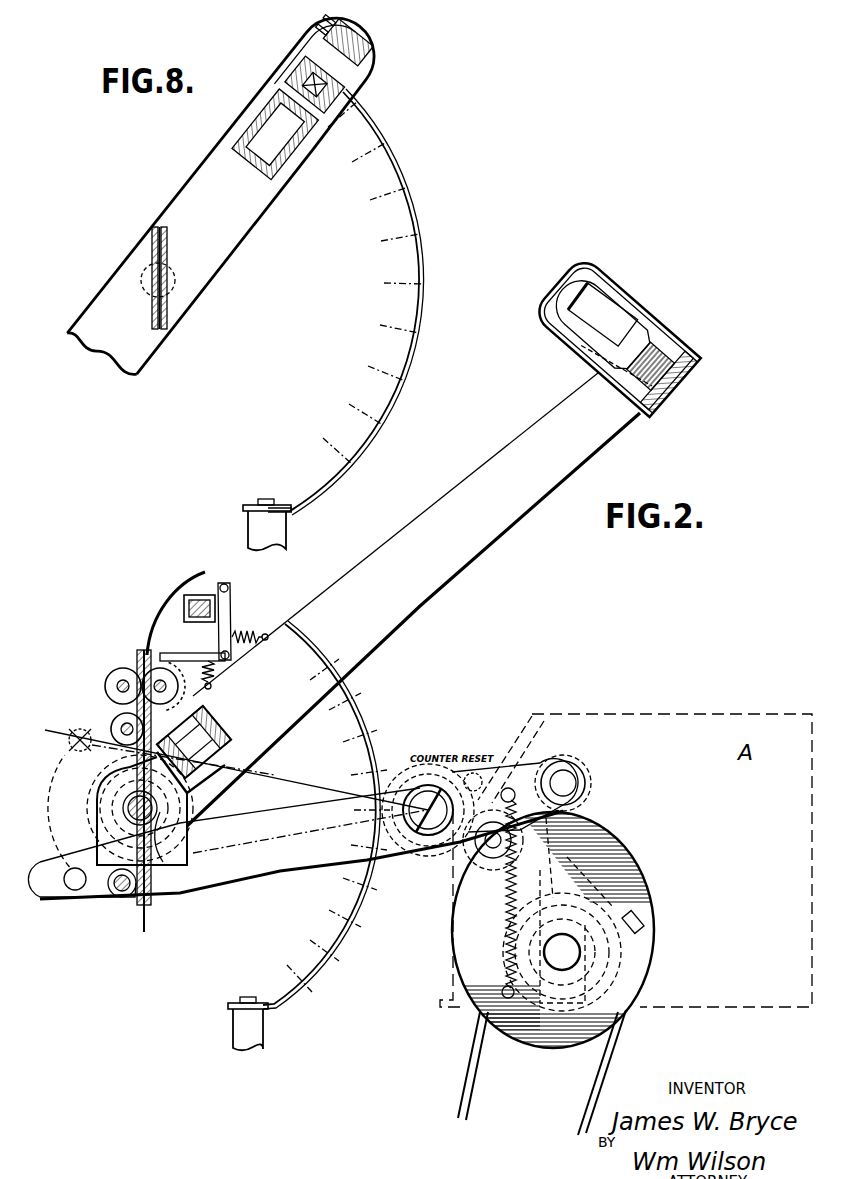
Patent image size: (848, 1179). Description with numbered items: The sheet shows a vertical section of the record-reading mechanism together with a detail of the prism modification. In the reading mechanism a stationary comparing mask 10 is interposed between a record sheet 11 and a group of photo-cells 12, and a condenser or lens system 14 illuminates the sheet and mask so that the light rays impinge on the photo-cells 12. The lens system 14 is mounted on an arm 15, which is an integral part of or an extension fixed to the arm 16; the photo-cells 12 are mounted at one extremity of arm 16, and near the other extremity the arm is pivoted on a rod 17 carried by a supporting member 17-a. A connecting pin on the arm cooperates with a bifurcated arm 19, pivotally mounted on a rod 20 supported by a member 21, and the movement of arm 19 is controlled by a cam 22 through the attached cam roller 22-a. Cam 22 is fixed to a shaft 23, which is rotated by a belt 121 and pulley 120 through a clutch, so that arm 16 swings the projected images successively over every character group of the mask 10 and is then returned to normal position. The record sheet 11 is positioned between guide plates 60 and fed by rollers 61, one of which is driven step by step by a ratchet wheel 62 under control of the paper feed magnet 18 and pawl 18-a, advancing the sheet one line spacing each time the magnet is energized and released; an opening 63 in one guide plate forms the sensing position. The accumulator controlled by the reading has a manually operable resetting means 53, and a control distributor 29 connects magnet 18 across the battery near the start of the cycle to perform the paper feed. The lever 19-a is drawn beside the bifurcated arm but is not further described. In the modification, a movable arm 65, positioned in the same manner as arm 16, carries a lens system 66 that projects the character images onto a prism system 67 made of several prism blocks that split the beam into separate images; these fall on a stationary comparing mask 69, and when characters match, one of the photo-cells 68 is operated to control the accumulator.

In FIG. 8, the movable arm 65 is at (201, 182).
In FIG. 8, the lens system 66 is at (262, 118).
In FIG. 8, the prism system 67 is at (300, 74).
In FIG. 8, the photo-cells 68 is at (336, 34).
In FIG. 8, the comparing mask 69 is at (419, 212).
In FIG. 2, the photo-cells 12 is at (612, 291).
In FIG. 2, the arm 16 is at (417, 604).
In FIG. 2, the record sheet 11 is at (168, 604).
In FIG. 2, the opening 63 is at (152, 894).
In FIG. 2, the rollers 61 is at (122, 673).
In FIG. 2, the ratchet wheel 62 is at (166, 668).
In FIG. 2, the guide plates 60 is at (119, 716).
In FIG. 2, the paper feed magnet 18 is at (210, 596).
In FIG. 2, the pawl 18-a is at (208, 650).
In FIG. 2, the condenser system 14 is at (212, 739).
In FIG. 2, the arm 15 is at (222, 778).
In FIG. 2, the rod 17 is at (192, 807).
In FIG. 2, the supporting member 17-a is at (195, 853).
In FIG. 2, the lever 19-a is at (77, 868).
In FIG. 2, the bifurcated arm 19 is at (287, 868).
In FIG. 2, the member 21 is at (398, 875).
In FIG. 2, the rod 20 is at (433, 838).
In FIG. 2, the comparing mask 10 is at (312, 979).
In FIG. 2, the resetting means 53 is at (514, 767).
In FIG. 2, the cam roller 22-a is at (592, 783).
In FIG. 2, the cam 22 is at (621, 854).
In FIG. 2, the control distributor 29 is at (552, 894).
In FIG. 2, the shaft 23 is at (566, 958).
In FIG. 2, the pulley 120 is at (618, 907).
In FIG. 2, the belt 121 is at (611, 1061).